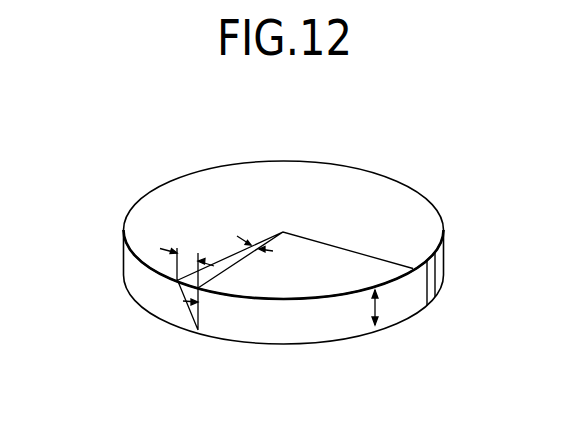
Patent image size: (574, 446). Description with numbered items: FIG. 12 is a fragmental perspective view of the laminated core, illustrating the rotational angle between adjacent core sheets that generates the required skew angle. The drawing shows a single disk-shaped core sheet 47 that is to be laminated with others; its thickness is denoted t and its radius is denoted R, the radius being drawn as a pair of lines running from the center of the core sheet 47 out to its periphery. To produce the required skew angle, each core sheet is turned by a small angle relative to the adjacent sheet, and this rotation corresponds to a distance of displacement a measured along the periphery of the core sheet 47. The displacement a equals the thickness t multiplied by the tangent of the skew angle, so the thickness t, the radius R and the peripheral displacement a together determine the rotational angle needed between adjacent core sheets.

The core sheet 47 is at (371, 173).
The radius of core sheet R is at (295, 250).
The distance of displacement a is at (187, 280).
The thickness of core sheet t is at (376, 305).